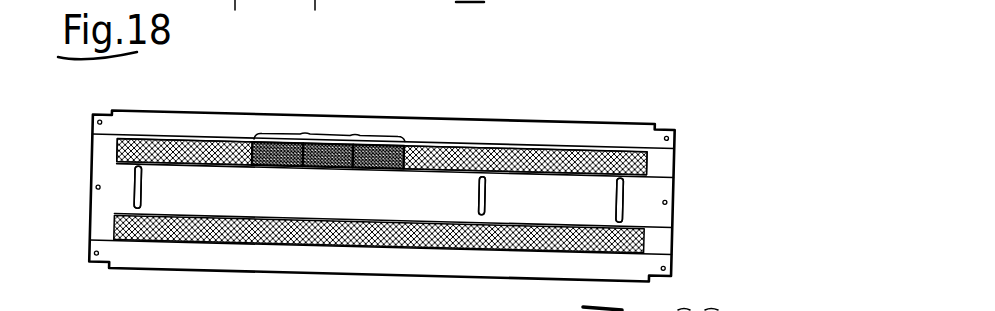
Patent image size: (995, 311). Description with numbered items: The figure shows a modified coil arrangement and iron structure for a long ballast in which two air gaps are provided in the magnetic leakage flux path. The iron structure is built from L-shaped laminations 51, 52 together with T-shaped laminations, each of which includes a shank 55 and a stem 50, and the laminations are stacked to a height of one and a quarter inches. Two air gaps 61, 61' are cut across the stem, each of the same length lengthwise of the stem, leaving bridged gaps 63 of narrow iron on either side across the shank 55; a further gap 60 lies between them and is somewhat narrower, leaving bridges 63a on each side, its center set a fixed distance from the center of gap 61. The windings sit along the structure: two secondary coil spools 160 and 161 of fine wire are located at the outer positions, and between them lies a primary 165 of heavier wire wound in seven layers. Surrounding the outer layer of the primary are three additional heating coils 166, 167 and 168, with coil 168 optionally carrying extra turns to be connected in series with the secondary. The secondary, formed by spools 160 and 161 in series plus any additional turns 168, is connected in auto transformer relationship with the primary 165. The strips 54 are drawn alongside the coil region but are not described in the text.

The stem 50 is at (96, 204).
The L-shaped lamination 51 is at (463, 269).
The L-shaped lamination 52 is at (446, 127).
The contact strip 54 is at (662, 167).
The shank 55 is at (661, 195).
The air gap 60 is at (488, 197).
The air gap 61 is at (599, 200).
The air gap 61' is at (166, 187).
The bridged gap 63 is at (141, 166).
The bridge 63a is at (488, 178).
The secondary coil spool 160 is at (532, 152).
The secondary coil spool 161 is at (196, 137).
The primary 165 is at (329, 111).
The heating coil 166 is at (282, 133).
The heating coil 167 is at (334, 133).
The heating coil 168 is at (376, 133).